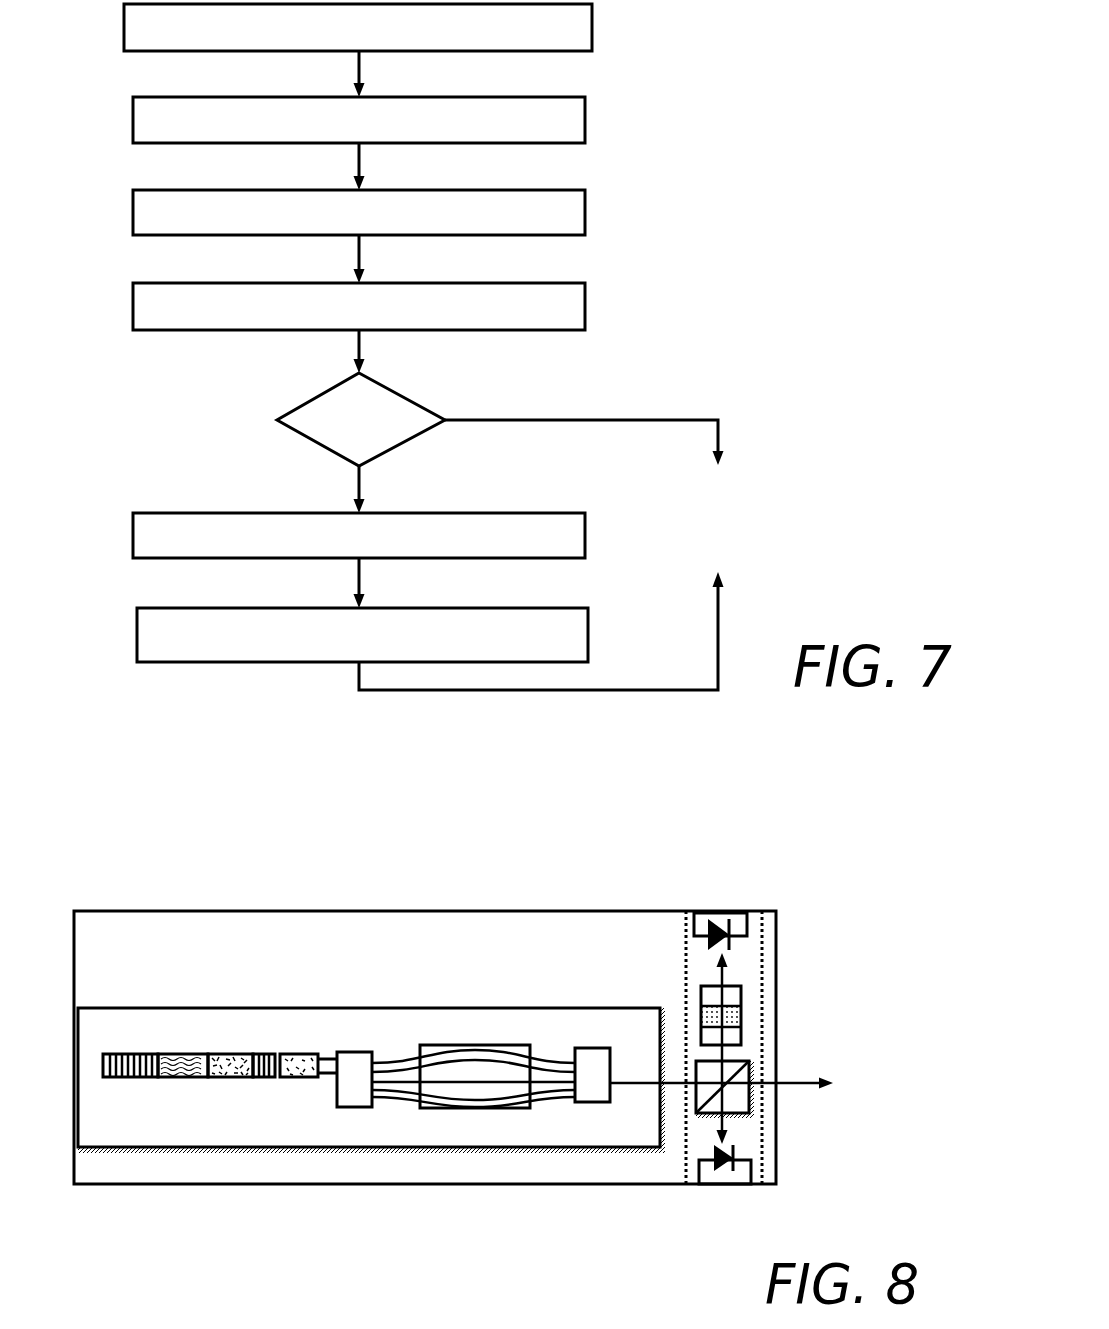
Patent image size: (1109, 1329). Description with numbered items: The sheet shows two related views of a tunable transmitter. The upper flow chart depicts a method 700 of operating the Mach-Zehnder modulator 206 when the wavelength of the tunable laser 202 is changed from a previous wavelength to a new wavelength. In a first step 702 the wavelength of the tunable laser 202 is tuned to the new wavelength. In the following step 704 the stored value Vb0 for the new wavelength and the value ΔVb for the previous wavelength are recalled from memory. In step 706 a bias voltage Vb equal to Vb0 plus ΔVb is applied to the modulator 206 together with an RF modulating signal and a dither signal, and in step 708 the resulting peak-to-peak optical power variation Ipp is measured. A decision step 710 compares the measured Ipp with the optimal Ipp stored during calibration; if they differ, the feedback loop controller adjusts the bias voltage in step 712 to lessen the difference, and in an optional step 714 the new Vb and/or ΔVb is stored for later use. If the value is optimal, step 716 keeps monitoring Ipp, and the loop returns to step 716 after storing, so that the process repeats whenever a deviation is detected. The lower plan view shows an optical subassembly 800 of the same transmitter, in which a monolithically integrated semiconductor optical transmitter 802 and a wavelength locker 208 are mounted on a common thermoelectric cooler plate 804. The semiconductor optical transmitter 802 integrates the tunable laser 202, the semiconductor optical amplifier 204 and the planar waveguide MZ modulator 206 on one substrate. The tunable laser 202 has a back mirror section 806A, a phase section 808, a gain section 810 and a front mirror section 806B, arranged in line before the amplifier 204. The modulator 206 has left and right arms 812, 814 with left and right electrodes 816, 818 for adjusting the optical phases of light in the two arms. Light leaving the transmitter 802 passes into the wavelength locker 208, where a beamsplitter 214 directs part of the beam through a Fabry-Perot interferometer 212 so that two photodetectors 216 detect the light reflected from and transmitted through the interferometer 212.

In FIG. 7, the method 700 is at (812, 98).
In FIG. 7, the step 702 is at (592, 26).
In FIG. 7, the step 704 is at (585, 112).
In FIG. 7, the step 706 is at (585, 206).
In FIG. 7, the step 708 is at (585, 298).
In FIG. 7, the step 710 is at (303, 438).
In FIG. 7, the step 712 is at (550, 512).
In FIG. 7, the optional step 714 is at (588, 624).
In FIG. 7, the step 716 is at (820, 503).
In FIG. 8, the optical subassembly 800 is at (850, 993).
In FIG. 8, the monolithically integrated semiconductor optical transmitter 802 is at (640, 1138).
In FIG. 8, the thermoelectric cooler plate 804 is at (147, 959).
In FIG. 8, the back mirror section 806A is at (137, 1054).
In FIG. 8, the front mirror section 806B is at (267, 1054).
In FIG. 8, the phase section 808 is at (188, 1054).
In FIG. 8, the gain section 810 is at (233, 1054).
In FIG. 8, the tunable laser 202 is at (228, 1035).
In FIG. 8, the semiconductor optical amplifier 204 is at (298, 1077).
In FIG. 8, the Mach-Zehnder modulator 206 is at (471, 1118).
In FIG. 8, the wavelength locker 208 is at (760, 950).
In FIG. 8, the Fabry-Perot interferometer 212 is at (701, 1015).
In FIG. 8, the beamsplitter 214 is at (740, 1102).
In FIG. 8, the photodetectors 216 is at (723, 911).
In FIG. 8, the left arm 812 is at (388, 1065).
In FIG. 8, the right arm 814 is at (405, 1088).
In FIG. 8, the left electrode 816 is at (483, 1067).
In FIG. 8, the right electrode 818 is at (520, 1105).